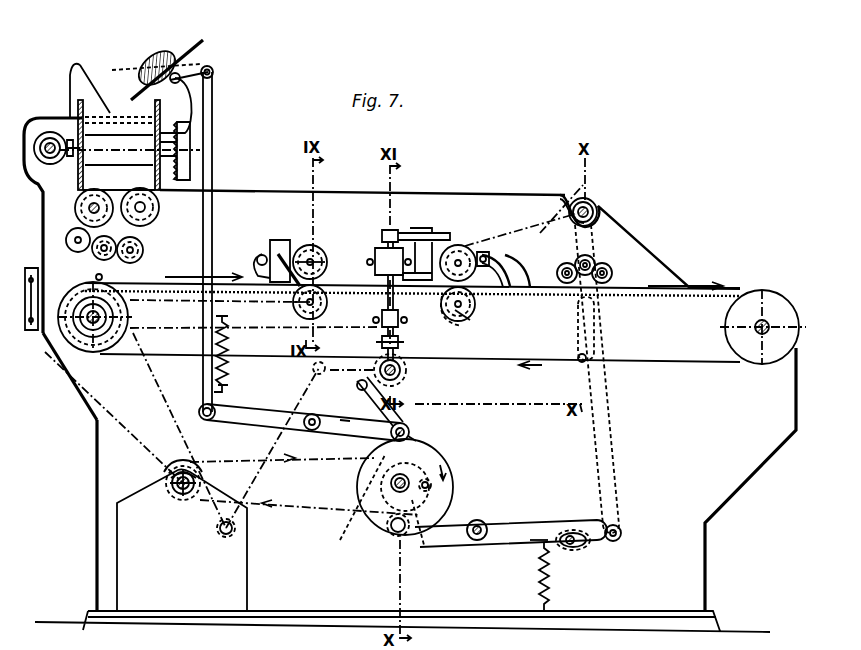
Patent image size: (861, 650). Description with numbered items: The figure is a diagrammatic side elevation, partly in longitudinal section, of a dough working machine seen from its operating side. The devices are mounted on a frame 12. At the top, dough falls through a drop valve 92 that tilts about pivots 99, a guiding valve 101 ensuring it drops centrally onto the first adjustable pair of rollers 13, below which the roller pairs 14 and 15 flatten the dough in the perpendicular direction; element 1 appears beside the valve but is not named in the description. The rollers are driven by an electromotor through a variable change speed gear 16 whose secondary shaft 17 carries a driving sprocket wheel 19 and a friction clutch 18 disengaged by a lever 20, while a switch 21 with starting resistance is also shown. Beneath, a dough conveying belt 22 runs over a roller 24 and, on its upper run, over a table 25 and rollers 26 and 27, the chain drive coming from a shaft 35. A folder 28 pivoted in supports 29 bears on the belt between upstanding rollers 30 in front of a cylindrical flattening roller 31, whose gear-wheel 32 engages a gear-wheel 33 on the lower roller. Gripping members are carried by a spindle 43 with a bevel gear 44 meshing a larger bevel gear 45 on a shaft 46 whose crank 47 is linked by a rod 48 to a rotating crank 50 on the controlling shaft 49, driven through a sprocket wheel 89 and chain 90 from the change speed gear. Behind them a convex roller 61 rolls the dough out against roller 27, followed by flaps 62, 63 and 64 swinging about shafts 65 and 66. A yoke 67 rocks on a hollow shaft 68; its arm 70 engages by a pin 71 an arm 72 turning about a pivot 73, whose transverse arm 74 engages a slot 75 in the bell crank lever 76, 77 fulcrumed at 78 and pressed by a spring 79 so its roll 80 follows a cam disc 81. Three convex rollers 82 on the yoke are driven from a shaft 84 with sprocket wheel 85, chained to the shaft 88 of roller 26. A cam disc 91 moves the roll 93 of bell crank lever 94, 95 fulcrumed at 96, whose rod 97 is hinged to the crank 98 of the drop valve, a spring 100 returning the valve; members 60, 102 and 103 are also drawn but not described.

The handle disk 1 is at (146, 63).
The frame 12 is at (108, 543).
The pair of rollers 13 is at (124, 154).
The roller pair 14 is at (80, 207).
The roller pair 15 is at (98, 251).
The variable change speed gear 16 is at (128, 572).
The secondary shaft 17 is at (178, 492).
The friction clutch 18 is at (178, 462).
The driving sprocket wheel 19 is at (190, 466).
The lever 20 is at (300, 470).
The switch with starting resistance 21 is at (29, 270).
The dough conveying belt 22 is at (676, 298).
The roller 24 is at (772, 302).
The table 25 is at (190, 298).
The roller 26 is at (294, 302).
The roller 27 is at (474, 320).
The folder 28 is at (290, 246).
The supports 29 is at (266, 252).
The upstanding rollers 30 is at (256, 260).
The cylindrical flattening roller 31 is at (325, 257).
The gear-wheel 32 is at (328, 263).
The gear-wheel 33 is at (328, 303).
The shaft 35 is at (60, 342).
The spindle 43 is at (86, 325).
The bevel gear 44 is at (400, 343).
The larger bevel gear 45 is at (406, 379).
The shaft 46 is at (402, 370).
The crank 47 is at (326, 371).
The rod 48 is at (398, 409).
The controlling shaft 49 is at (390, 483).
The rotating crank 50 is at (436, 488).
The roller 60 is at (465, 248).
The roller having a convex shape 61 is at (468, 240).
The flap 62 is at (478, 300).
The flap 63 is at (532, 262).
The flap 64 is at (555, 270).
The shaft 65 is at (505, 256).
The shaft 66 is at (489, 254).
The yoke 67 is at (592, 256).
The shaft 68 is at (598, 207).
The downwardly projecting arm 70 is at (598, 330).
The pin 71 is at (578, 364).
The arm 72 is at (612, 406).
The pivot 73 is at (622, 530).
The transverse arm 74 is at (580, 526).
The slot 75 is at (580, 548).
The arm of bell crank lever 76 is at (540, 546).
The arm of bell crank lever 77 is at (448, 542).
The fulcrum 78 is at (488, 526).
The spring 79 is at (554, 585).
The roll 80 is at (394, 535).
The cam disc 81 is at (422, 546).
The convex rollers 82 is at (560, 284).
The shaft 84 is at (576, 205).
The sprocket wheel 85 is at (596, 213).
The shaft 88 is at (462, 328).
The sprocket wheel 89 is at (352, 538).
The chain 90 is at (300, 508).
The cam disc 91 is at (452, 460).
The drop valve 92 is at (203, 40).
The roll 93 is at (412, 432).
The arm of bell crank lever 94 is at (346, 422).
The arm of bell crank lever 95 is at (258, 414).
The fulcrum 96 is at (308, 432).
The rod 97 is at (213, 132).
The crank 98 is at (212, 68).
The pivots 99 is at (210, 82).
The spring 100 is at (232, 352).
The guiding valve 101 is at (104, 75).
The guide bar 102 is at (430, 195).
The belt run 103 is at (690, 282).